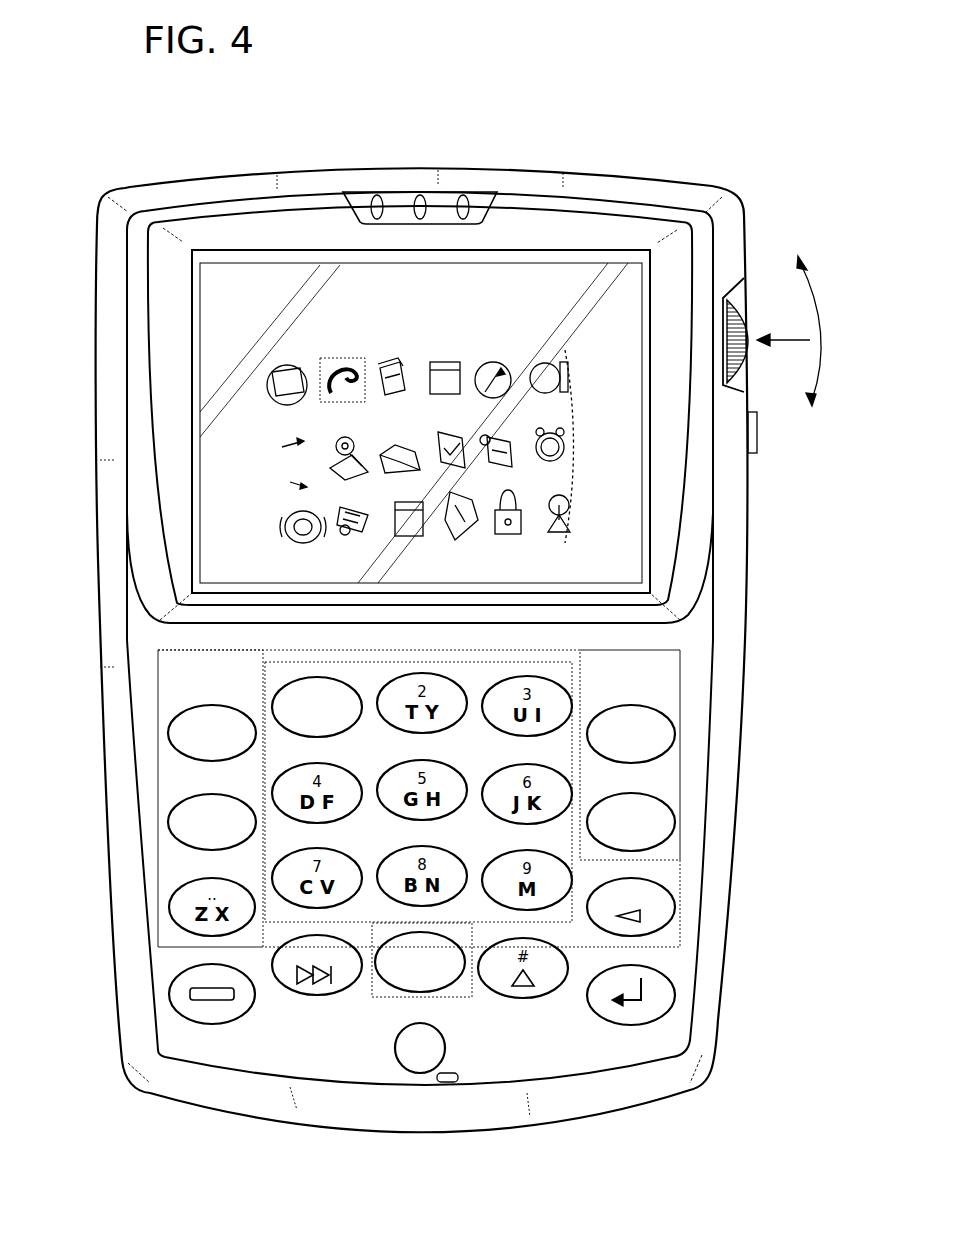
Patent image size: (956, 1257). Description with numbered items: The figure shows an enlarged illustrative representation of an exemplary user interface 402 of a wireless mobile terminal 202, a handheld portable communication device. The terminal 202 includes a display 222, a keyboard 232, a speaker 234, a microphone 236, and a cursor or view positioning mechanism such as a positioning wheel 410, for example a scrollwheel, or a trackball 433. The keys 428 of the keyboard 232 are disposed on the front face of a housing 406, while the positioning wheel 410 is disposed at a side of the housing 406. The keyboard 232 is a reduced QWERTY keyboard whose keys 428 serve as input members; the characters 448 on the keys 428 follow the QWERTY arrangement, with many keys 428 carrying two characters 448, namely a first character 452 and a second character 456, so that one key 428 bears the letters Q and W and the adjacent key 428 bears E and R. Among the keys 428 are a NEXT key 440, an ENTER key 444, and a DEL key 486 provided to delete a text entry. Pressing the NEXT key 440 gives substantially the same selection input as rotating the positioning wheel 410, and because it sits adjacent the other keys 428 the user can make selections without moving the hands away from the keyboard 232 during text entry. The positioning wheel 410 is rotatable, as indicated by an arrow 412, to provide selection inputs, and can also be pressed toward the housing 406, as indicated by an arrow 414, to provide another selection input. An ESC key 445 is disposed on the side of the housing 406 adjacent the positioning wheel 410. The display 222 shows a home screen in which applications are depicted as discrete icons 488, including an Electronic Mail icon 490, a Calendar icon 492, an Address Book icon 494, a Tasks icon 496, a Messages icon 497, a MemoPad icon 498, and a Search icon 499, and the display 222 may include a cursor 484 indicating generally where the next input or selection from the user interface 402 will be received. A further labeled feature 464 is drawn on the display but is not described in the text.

The wireless mobile terminal 202 is at (242, 159).
The speaker 234 is at (405, 188).
The housing 406 is at (598, 172).
The arrow 412 is at (818, 300).
The arrow 414 is at (795, 340).
The positioning wheel 410 is at (747, 357).
The display 222 is at (623, 290).
The ESC key 445 is at (757, 432).
The user interface 402 is at (760, 655).
The cursor 464 is at (520, 333).
The Electronic Mail (E-Mail) icon 490 is at (278, 364).
The cursor 484 is at (347, 337).
The Address Book icon 494 is at (400, 352).
The Calendar icon 492 is at (443, 358).
The Messages icon 497 is at (302, 441).
The Search icon 499 is at (347, 441).
The Tasks icon 496 is at (442, 432).
The MemoPad icon 498 is at (498, 437).
The icons 488 is at (575, 445).
The keys 428 is at (180, 706).
The first character 452 is at (183, 818).
The second character 456 is at (210, 797).
The characters 448 is at (227, 853).
The keyboard 232 is at (680, 803).
The DEL key 486 is at (676, 910).
The ENTER key 444 is at (676, 985).
The trackball 433 is at (445, 1025).
The NEXT key 440 is at (317, 997).
The microphone 236 is at (447, 1090).